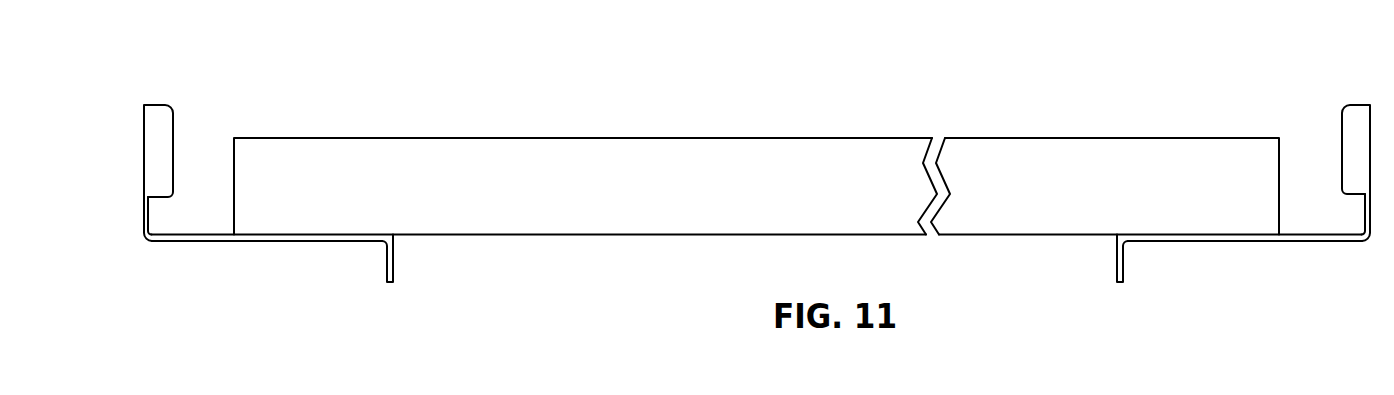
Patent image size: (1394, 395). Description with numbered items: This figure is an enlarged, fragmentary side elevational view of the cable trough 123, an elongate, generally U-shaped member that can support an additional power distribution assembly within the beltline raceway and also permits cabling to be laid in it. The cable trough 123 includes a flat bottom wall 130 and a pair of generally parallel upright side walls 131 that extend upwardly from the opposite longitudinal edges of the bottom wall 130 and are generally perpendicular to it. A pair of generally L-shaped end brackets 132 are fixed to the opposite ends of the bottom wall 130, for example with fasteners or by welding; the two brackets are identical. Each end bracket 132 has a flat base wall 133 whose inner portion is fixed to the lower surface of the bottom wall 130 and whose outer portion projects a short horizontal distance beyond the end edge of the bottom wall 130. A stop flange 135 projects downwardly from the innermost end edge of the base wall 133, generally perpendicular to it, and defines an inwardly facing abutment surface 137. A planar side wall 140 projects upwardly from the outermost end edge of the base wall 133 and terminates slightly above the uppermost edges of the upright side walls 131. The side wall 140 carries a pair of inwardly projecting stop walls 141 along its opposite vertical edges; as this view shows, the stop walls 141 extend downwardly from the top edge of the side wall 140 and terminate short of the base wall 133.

The cable trough 123 is at (710, 114).
The bottom wall 130 is at (608, 237).
The upright side walls 131 is at (462, 153).
The end brackets 132 is at (173, 254).
The base wall 133 is at (248, 243).
The stop flange 135 is at (402, 276).
The abutment surface 137 is at (394, 251).
The side wall 140 is at (135, 236).
The stop walls 141 is at (165, 137).